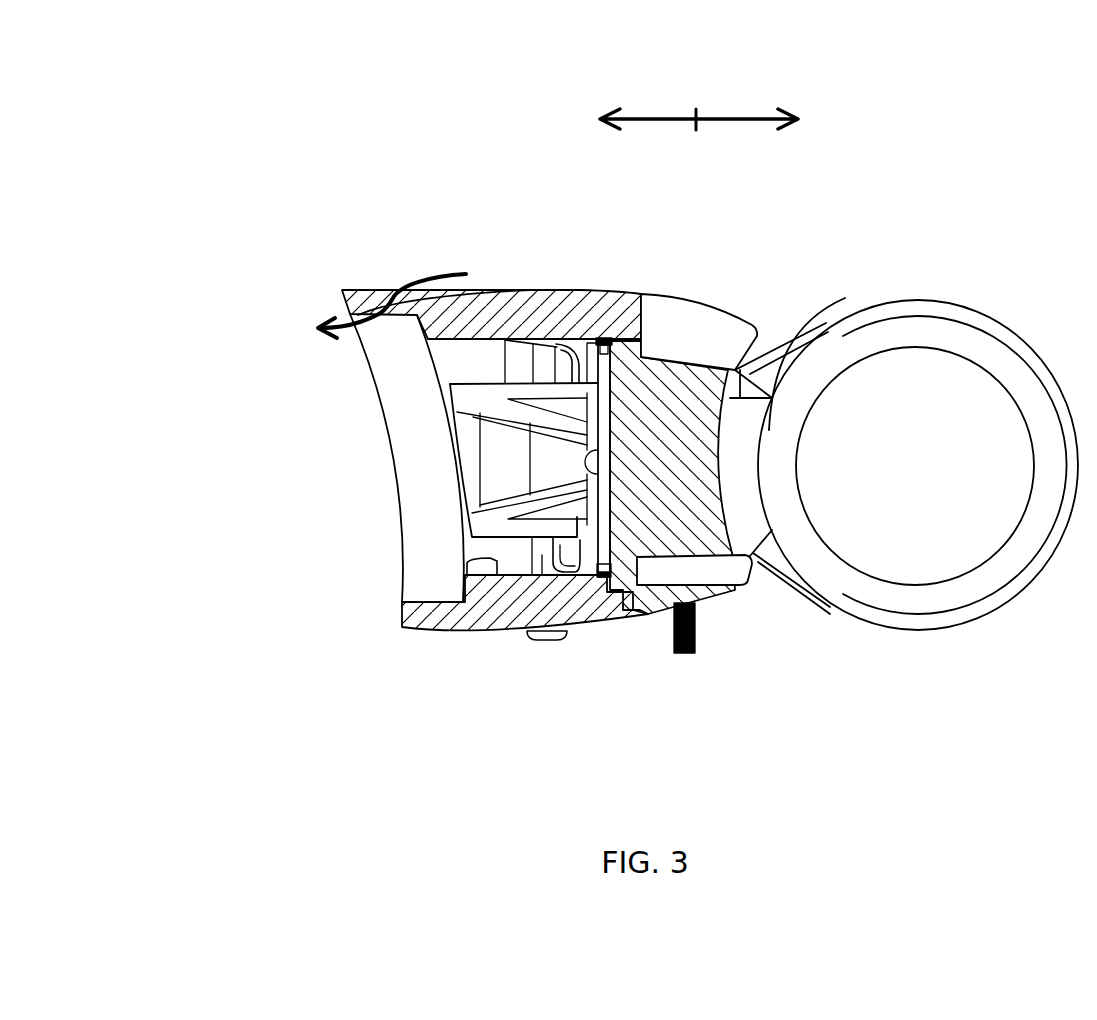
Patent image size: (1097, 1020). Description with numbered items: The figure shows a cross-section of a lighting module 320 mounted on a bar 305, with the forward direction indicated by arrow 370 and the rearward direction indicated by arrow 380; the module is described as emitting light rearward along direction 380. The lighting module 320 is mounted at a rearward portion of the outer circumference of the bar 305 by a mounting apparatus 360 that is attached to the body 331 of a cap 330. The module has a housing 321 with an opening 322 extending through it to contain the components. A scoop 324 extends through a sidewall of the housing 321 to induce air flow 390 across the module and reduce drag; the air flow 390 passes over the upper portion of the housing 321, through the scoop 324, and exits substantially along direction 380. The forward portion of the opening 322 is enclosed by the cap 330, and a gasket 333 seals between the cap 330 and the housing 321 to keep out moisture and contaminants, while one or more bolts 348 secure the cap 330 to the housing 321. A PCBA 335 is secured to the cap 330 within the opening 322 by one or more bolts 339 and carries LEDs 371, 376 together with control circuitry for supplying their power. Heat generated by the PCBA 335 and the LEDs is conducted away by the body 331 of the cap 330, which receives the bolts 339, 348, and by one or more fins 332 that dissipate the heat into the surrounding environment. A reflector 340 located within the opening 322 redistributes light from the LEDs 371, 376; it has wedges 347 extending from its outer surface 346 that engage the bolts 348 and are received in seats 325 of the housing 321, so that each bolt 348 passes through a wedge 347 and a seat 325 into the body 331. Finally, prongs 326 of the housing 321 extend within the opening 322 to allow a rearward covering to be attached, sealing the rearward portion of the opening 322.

The bar 305 is at (948, 598).
The lighting module 320 is at (266, 418).
The housing 321 is at (410, 627).
The opening 322 is at (462, 548).
The scoop 324 is at (382, 291).
The seat 325 is at (587, 577).
The prong 326 is at (545, 338).
The cap 330 is at (683, 473).
The body 331 is at (677, 367).
The fin 332 is at (740, 333).
The gasket 333 is at (618, 580).
The PCBA 335 is at (604, 340).
The bolt 339 is at (582, 342).
The reflector 340 is at (483, 522).
The outer surface 346 is at (487, 315).
The wedge 347 is at (560, 574).
The bolt 348 is at (542, 557).
The mounting apparatus 360 is at (750, 422).
The forward direction arrow 370 is at (757, 118).
The LED 371 is at (585, 465).
The LED 376 is at (597, 579).
The rearward direction arrow 380 is at (651, 118).
The air flow 390 is at (408, 297).